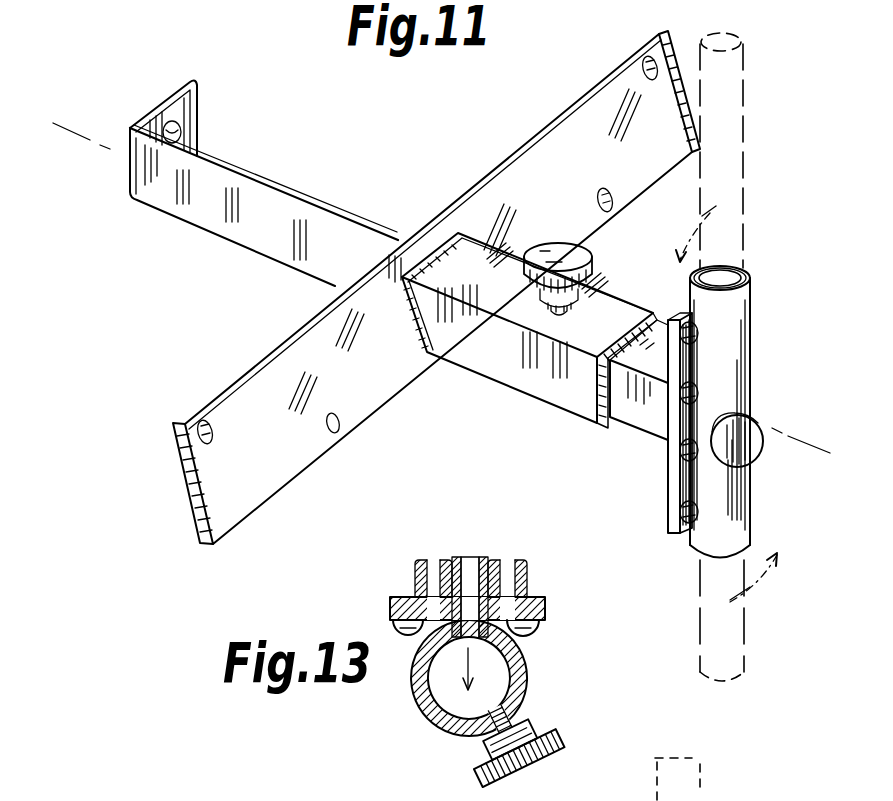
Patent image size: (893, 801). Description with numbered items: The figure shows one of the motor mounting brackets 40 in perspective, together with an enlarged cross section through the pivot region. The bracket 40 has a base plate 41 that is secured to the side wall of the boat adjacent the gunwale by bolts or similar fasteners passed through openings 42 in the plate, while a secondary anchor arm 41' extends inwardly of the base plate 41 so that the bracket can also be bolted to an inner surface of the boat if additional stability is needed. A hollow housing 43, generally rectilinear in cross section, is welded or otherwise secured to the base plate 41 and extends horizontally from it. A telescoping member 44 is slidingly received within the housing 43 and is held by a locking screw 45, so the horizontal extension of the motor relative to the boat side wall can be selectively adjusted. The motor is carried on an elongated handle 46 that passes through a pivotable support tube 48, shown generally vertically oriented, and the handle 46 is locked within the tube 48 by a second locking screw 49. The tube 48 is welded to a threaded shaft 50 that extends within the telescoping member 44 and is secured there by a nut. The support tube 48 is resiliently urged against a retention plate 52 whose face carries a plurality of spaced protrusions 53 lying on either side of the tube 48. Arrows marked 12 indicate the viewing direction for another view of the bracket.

In FIG. 11, the section line / viewing direction 12 is at (77, 134).
In FIG. 11, the mounting bracket 40 is at (447, 370).
In FIG. 11, the base plate 41 is at (436, 287).
In FIG. 11, the secondary anchor arm 41' is at (260, 183).
In FIG. 11, the openings 42 is at (230, 360).
In FIG. 11, the hollow housing 43 is at (537, 380).
In FIG. 11, the telescoping member 44 is at (642, 410).
In FIG. 11, the locking screw 45 is at (577, 250).
In FIG. 11, the elongated handle 46 is at (733, 153).
In FIG. 11, the pivotable support tube 48 is at (747, 300).
In FIG. 13, the pivotable support tube 48 is at (527, 674).
In FIG. 11, the second locking screw 49 is at (753, 437).
In FIG. 13, the second locking screw 49 is at (554, 732).
In FIG. 13, the threaded shaft 50 is at (508, 536).
In FIG. 11, the retention plate 52 is at (672, 473).
In FIG. 13, the retention plate 52 is at (547, 603).
In FIG. 11, the protrusions 53 is at (697, 392).
In FIG. 13, the protrusions 53 is at (515, 627).